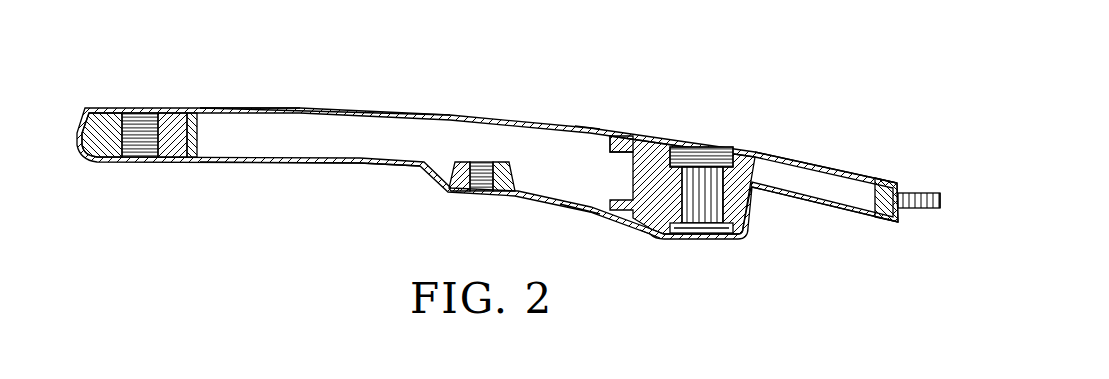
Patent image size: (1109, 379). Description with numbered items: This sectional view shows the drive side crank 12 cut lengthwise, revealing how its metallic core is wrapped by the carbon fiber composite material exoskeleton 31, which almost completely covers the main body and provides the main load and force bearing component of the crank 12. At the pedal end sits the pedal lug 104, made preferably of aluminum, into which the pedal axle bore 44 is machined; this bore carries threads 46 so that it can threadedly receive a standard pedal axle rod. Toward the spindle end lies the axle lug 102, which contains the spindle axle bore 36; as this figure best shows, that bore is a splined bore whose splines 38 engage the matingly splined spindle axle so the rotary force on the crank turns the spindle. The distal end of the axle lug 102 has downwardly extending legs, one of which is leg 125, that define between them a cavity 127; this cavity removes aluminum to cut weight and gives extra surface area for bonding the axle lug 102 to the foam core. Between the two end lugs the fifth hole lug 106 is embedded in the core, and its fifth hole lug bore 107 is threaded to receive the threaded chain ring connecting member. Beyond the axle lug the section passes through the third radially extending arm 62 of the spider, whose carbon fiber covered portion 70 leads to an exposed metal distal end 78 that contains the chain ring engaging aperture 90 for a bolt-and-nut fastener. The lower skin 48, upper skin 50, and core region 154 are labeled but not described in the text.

The drive side crank 12 is at (550, 98).
The carbon fiber composite material exoskeleton 31 is at (268, 105).
The spindle axle bore 36 is at (710, 144).
The splines 38 is at (708, 220).
The pedal axle bore 44 is at (142, 110).
The threads 46 is at (141, 160).
The lower skin 48 is at (373, 170).
The upper skin 50 is at (335, 108).
The third radially extending arm 62 is at (792, 213).
The carbon fiber covered portion 70 is at (805, 155).
The exposed metal distal end 78 is at (945, 193).
The chain ring engaging aperture 90 is at (920, 193).
The axle lug 102 is at (647, 157).
The pedal lug 104 is at (170, 111).
The fifth hole lug 106 is at (497, 200).
The fifth hole lug bore 107 is at (483, 197).
The downwardly extending leg 125 is at (618, 138).
The cavity 127 is at (587, 130).
The core 154 is at (583, 204).